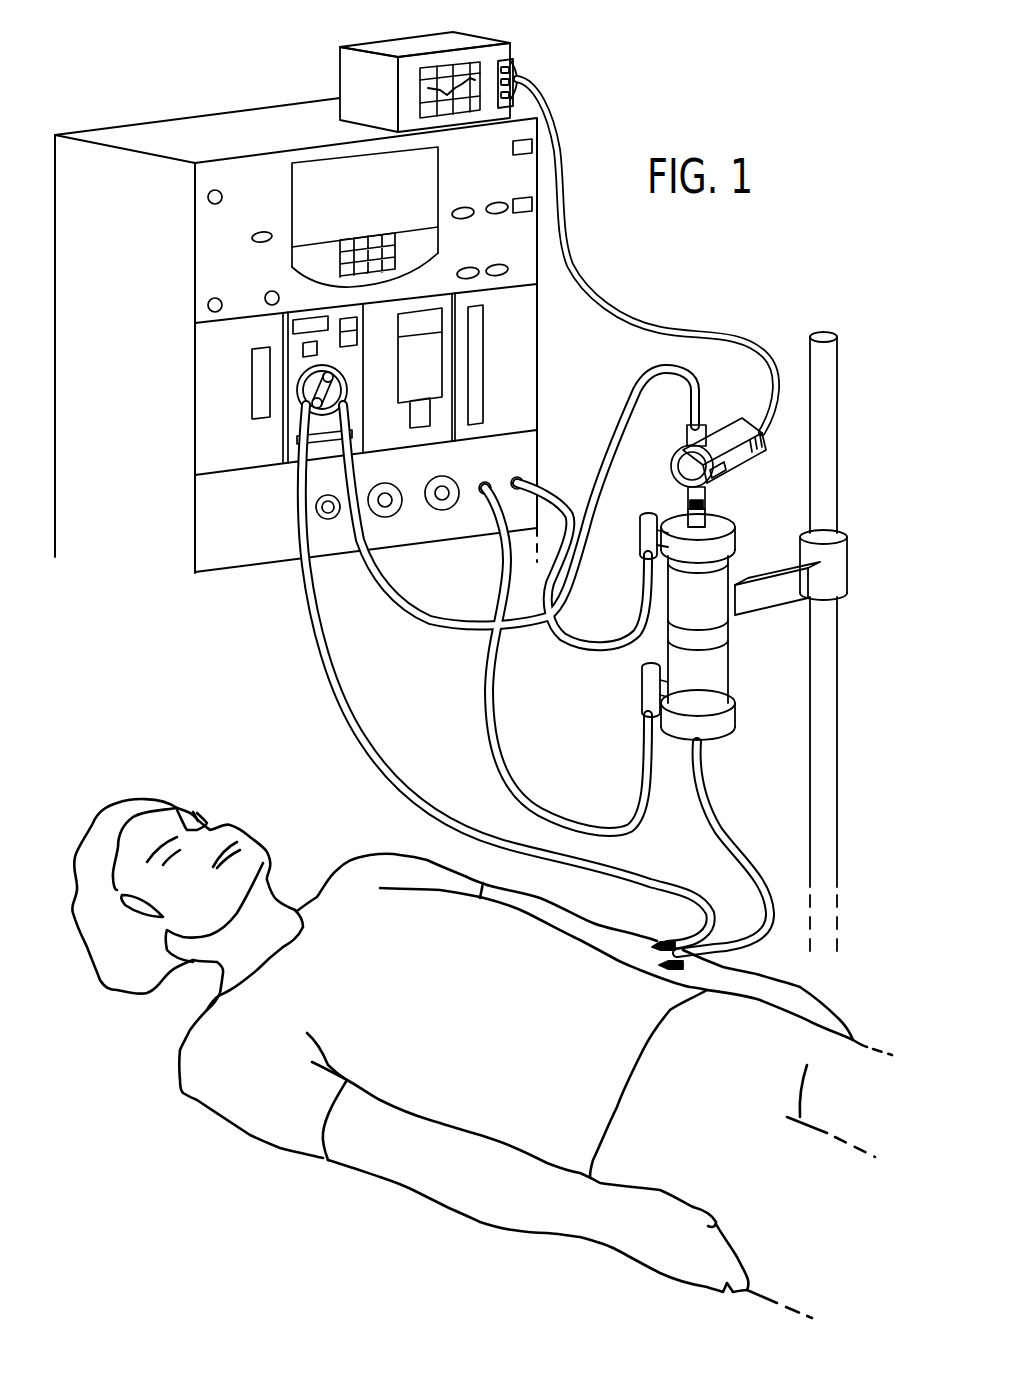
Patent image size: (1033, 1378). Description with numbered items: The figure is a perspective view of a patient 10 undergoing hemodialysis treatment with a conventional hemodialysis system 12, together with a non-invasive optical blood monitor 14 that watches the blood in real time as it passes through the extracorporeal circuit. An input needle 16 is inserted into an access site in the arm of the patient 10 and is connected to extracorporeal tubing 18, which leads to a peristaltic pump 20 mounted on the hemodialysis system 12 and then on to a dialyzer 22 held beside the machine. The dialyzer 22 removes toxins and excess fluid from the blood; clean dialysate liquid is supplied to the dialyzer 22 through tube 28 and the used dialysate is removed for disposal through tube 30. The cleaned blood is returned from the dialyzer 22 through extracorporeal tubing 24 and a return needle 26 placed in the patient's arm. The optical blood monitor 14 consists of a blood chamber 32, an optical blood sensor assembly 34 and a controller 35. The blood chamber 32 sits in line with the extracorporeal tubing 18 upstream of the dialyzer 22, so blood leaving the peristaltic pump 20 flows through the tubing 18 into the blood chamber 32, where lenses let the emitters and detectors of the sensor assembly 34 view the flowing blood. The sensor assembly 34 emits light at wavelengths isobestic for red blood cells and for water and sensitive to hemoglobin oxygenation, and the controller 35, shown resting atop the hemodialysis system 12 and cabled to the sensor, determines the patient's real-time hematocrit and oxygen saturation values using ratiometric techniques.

The patient 10 is at (178, 1082).
The hemodialysis system 12 is at (125, 105).
The optical blood monitor 14 is at (517, 33).
The input needle 16 is at (660, 940).
The extracorporeal tubing 18 is at (430, 628).
The peristaltic pump 20 is at (310, 387).
The dialyzer 22 is at (718, 577).
The extracorporeal tubing 24 is at (708, 808).
The return needle 26 is at (750, 948).
The tube 28 is at (510, 748).
The tube 30 is at (565, 503).
The blood chamber 32 is at (705, 425).
The optical blood sensor assembly 34 is at (763, 440).
The controller 35 is at (410, 45).